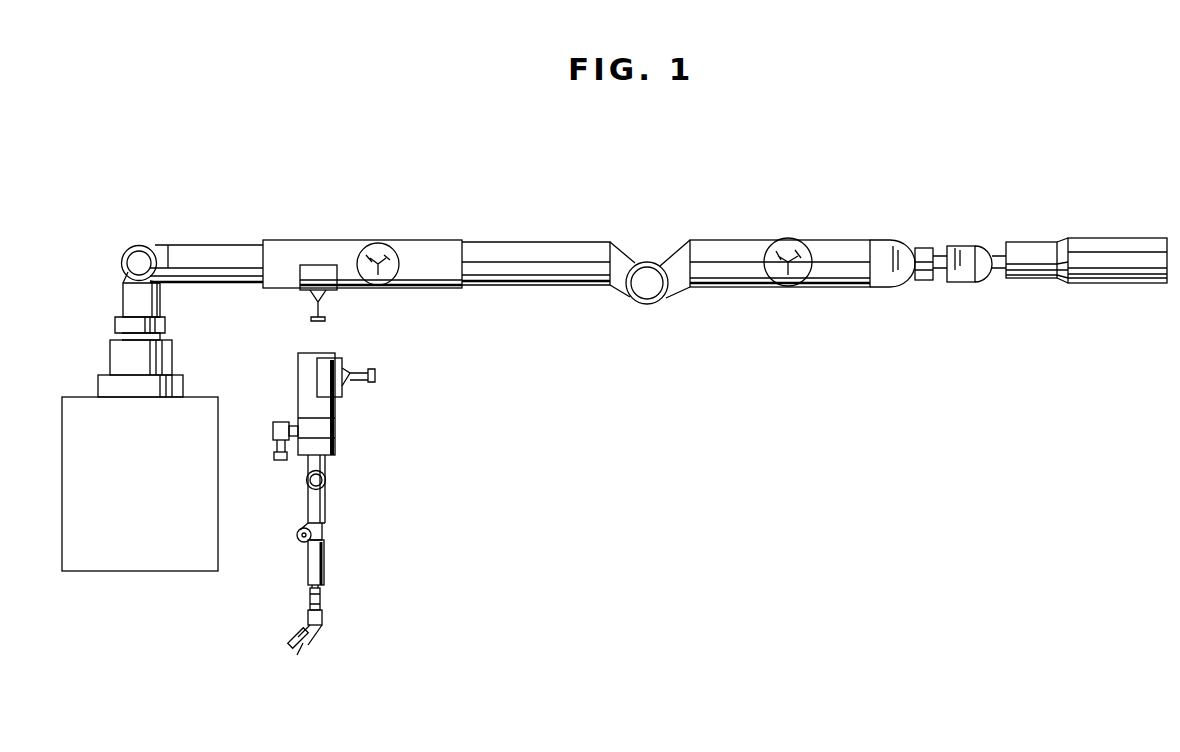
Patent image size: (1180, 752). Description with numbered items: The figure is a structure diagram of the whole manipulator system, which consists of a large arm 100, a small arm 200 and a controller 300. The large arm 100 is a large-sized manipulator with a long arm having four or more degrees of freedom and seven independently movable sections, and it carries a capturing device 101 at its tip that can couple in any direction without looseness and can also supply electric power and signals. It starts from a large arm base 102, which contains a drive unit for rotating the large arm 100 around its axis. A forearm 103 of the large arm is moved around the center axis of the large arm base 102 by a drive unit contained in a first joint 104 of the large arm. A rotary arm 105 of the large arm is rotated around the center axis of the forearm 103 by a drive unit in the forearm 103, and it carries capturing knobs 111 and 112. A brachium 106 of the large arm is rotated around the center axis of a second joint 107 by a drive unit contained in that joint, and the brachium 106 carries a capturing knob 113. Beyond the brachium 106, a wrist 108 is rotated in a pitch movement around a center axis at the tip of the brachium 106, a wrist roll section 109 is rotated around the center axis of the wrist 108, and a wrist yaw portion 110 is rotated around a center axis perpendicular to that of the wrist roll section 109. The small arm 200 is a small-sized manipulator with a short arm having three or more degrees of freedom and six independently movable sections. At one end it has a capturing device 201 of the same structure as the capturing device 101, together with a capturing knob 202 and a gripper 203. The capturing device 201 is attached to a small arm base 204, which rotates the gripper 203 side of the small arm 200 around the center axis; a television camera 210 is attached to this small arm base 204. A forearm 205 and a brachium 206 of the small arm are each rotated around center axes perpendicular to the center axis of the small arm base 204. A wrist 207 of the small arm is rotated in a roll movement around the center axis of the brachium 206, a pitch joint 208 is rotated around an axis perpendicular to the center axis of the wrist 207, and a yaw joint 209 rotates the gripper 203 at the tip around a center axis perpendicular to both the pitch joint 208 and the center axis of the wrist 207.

The large arm 100 is at (633, 167).
The capturing device 101 is at (1120, 245).
The large arm base 102 is at (172, 352).
The forearm of the large arm 103 is at (222, 252).
The first joint of the large arm 104 is at (136, 257).
The rotary arm of the large arm 105 is at (330, 250).
The brachium of the large arm 106 is at (732, 252).
The second joint of the large arm 107 is at (645, 290).
The wrist of the large arm 108 is at (925, 283).
The wrist roll section of the large arm 109 is at (967, 272).
The wrist yaw portion 110 is at (1031, 250).
The capturing knob 111 is at (325, 306).
The capturing knob 112 is at (385, 280).
The capturing knob 113 is at (787, 250).
The small arm 200 is at (610, 556).
The capturing device 201 is at (298, 390).
The capturing knob 202 is at (376, 376).
The gripper 203 is at (280, 637).
The small arm base 204 is at (337, 428).
The forearm of the small arm 205 is at (327, 503).
The brachium of the small arm 206 is at (310, 567).
The wrist of the small arm 207 is at (325, 593).
The pitch joint of the small arm 208 is at (308, 618).
The yaw joint of the small arm 209 is at (313, 633).
The television camera 210 is at (273, 432).
The controller 300 is at (147, 573).